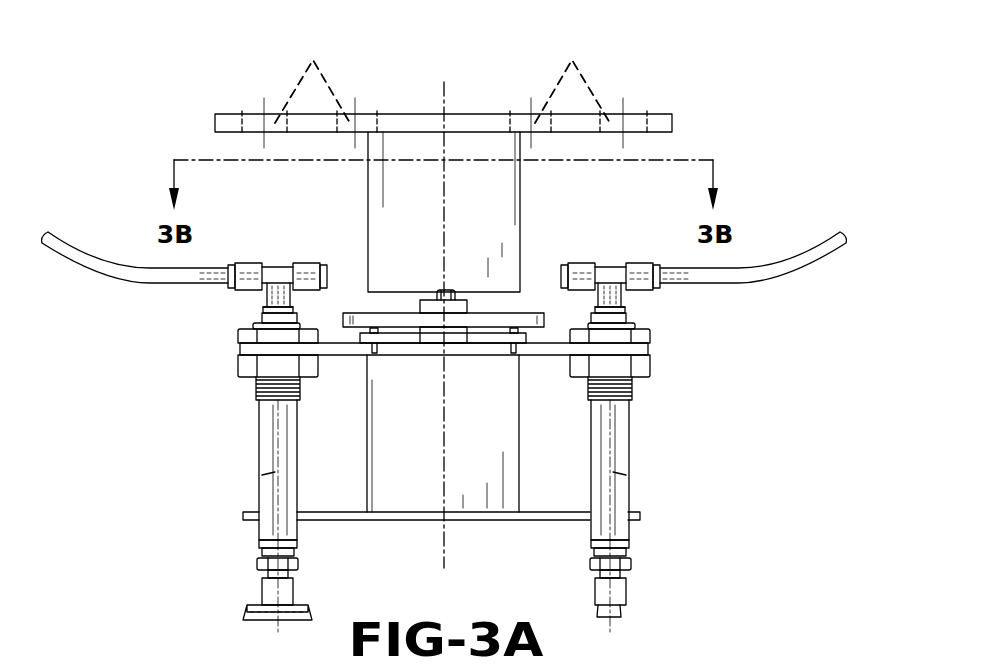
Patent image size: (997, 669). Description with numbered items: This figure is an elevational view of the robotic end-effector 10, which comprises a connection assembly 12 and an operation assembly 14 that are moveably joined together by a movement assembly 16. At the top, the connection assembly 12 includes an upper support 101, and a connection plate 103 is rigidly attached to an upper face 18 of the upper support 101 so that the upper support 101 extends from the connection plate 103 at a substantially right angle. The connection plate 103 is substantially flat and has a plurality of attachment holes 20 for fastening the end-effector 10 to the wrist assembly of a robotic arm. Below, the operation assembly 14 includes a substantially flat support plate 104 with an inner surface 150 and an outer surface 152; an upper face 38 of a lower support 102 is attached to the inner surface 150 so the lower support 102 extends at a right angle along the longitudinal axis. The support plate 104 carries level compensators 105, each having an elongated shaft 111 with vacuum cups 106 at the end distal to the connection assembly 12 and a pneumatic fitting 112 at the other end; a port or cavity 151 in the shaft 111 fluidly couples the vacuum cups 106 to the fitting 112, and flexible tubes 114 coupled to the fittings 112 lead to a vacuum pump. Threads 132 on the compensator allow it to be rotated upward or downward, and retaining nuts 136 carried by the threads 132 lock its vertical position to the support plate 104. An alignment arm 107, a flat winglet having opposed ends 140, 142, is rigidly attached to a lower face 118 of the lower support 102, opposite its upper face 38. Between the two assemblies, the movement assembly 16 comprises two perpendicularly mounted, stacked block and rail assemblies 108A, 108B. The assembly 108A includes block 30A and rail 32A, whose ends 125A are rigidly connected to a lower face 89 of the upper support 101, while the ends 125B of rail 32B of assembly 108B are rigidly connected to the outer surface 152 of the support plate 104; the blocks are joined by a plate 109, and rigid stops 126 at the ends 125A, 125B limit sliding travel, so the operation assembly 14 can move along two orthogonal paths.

The end-effector 10 is at (108, 106).
The connection assembly 12 is at (652, 101).
The operation assembly 14 is at (680, 574).
The movement assembly 16 is at (315, 313).
The upper face 18 is at (461, 134).
The attachment holes 20 is at (442, 77).
The block 30A is at (433, 297).
The rail 32A is at (452, 295).
The rail 32B is at (363, 345).
The upper face 38 is at (413, 357).
The lower face 89 is at (382, 298).
The upper support 101 is at (477, 147).
The lower support 102 is at (368, 488).
The connection plate 103 is at (672, 124).
The support plate 104 is at (247, 353).
The level compensators 105 is at (258, 461).
The vacuum cups 106 is at (247, 610).
The alignment arm 107 is at (553, 515).
The block and rail assembly 108A is at (473, 307).
The block and rail assembly 108B is at (465, 356).
The plate 109 is at (340, 318).
The elongated shaft 111 is at (260, 492).
The pneumatic fitting 112 is at (257, 265).
The flexible tubes 114 is at (83, 265).
The lower face 118 is at (430, 512).
The ends 125A is at (438, 290).
The ends 125B is at (263, 309).
The rigid stops 126 is at (444, 247).
The threads 132 is at (257, 380).
The retaining nuts 136 is at (290, 338).
The end 140 is at (247, 521).
The end 142 is at (640, 521).
The inner surface 150 is at (540, 347).
The port or cavity 151 is at (262, 475).
The outer surface 152 is at (650, 336).